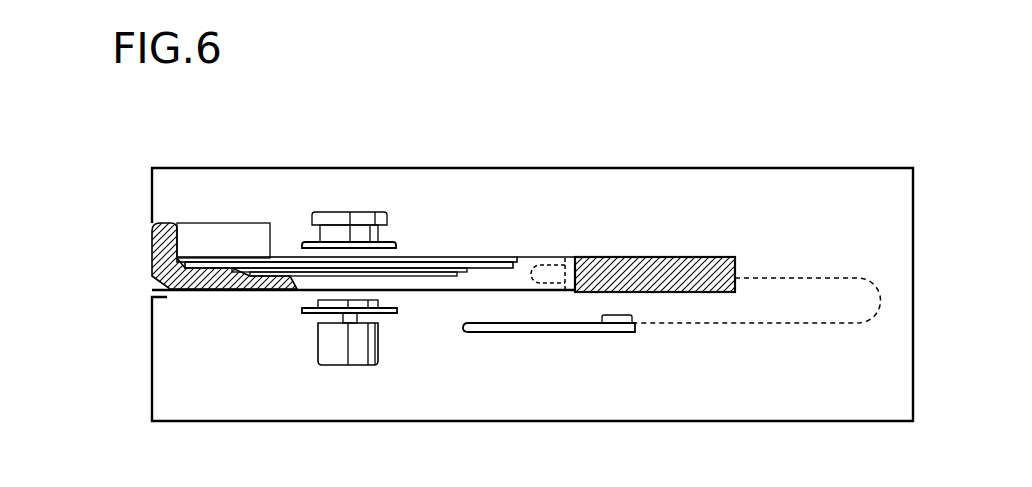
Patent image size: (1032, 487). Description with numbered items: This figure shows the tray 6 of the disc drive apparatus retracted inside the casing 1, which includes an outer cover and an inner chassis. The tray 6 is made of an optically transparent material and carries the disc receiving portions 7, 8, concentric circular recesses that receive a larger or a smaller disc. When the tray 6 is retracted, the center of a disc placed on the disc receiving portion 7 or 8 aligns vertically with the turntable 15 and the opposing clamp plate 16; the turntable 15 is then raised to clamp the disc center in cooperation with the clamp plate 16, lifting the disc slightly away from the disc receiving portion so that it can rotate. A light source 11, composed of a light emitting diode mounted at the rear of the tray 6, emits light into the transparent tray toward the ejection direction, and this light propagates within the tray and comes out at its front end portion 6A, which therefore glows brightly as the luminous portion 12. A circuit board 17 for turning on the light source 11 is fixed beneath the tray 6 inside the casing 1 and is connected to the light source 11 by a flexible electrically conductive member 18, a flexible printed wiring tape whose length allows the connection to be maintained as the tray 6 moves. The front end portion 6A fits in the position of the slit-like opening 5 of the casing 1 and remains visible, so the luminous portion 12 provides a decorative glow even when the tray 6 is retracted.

The casing 1 is at (768, 168).
The opening 5 is at (153, 282).
The tray 6 is at (610, 234).
The front end portion 6A is at (152, 243).
The luminous portion 12 is at (223, 240).
The disc receiving portion 7 is at (500, 257).
The disc receiving portion 8 is at (292, 268).
The light source 11 is at (552, 265).
The turntable 15 is at (302, 310).
The clamp plate 16 is at (391, 243).
The circuit board 17 is at (532, 333).
The flexible electrically conductive member 18 is at (838, 278).